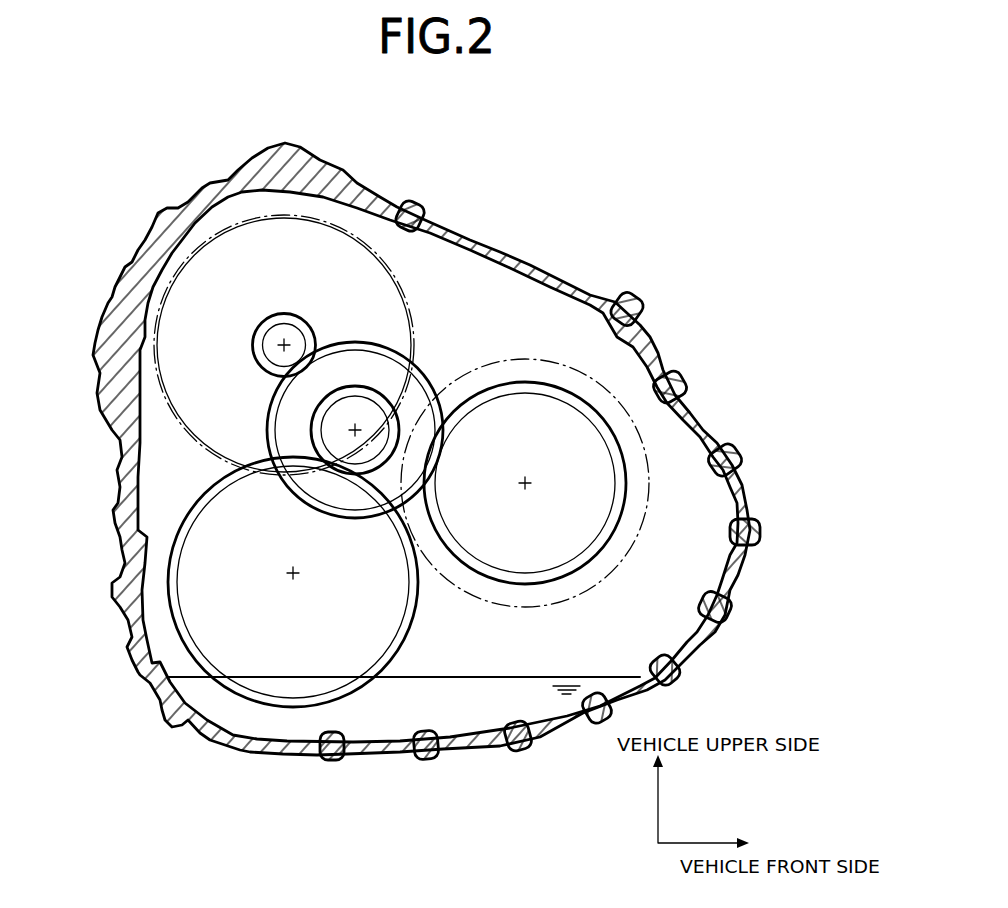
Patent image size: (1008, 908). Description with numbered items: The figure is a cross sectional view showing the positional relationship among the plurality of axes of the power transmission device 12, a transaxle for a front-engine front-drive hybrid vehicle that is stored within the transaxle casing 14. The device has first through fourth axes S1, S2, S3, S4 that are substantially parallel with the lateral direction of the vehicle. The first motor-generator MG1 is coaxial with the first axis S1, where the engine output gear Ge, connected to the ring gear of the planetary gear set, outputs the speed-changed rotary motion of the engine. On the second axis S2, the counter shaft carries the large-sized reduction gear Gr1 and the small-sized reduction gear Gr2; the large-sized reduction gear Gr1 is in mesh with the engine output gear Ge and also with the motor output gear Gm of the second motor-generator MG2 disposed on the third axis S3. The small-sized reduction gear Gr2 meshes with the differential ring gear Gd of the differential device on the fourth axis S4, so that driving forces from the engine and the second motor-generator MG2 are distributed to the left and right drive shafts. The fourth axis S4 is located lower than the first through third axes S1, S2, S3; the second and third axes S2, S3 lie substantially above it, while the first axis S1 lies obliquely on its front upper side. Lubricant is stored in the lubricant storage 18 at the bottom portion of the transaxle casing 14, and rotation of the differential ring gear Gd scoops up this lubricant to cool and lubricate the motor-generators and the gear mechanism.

The power transmission device 12 is at (426, 448).
The transaxle casing 14 is at (677, 378).
The lubricant storage 18 is at (600, 664).
The first motor-generator MG1 is at (651, 481).
The second motor-generator MG2 is at (202, 248).
The engine output gear Ge is at (573, 400).
The motor output gear Gm is at (254, 348).
The large-sized reduction gear Gr1 is at (420, 368).
The small-sized reduction gear Gr2 is at (318, 439).
The differential ring gear Gd is at (170, 598).
The first axis S1 is at (535, 474).
The second axis S2 is at (362, 422).
The third axis S3 is at (281, 340).
The fourth axis S4 is at (282, 563).